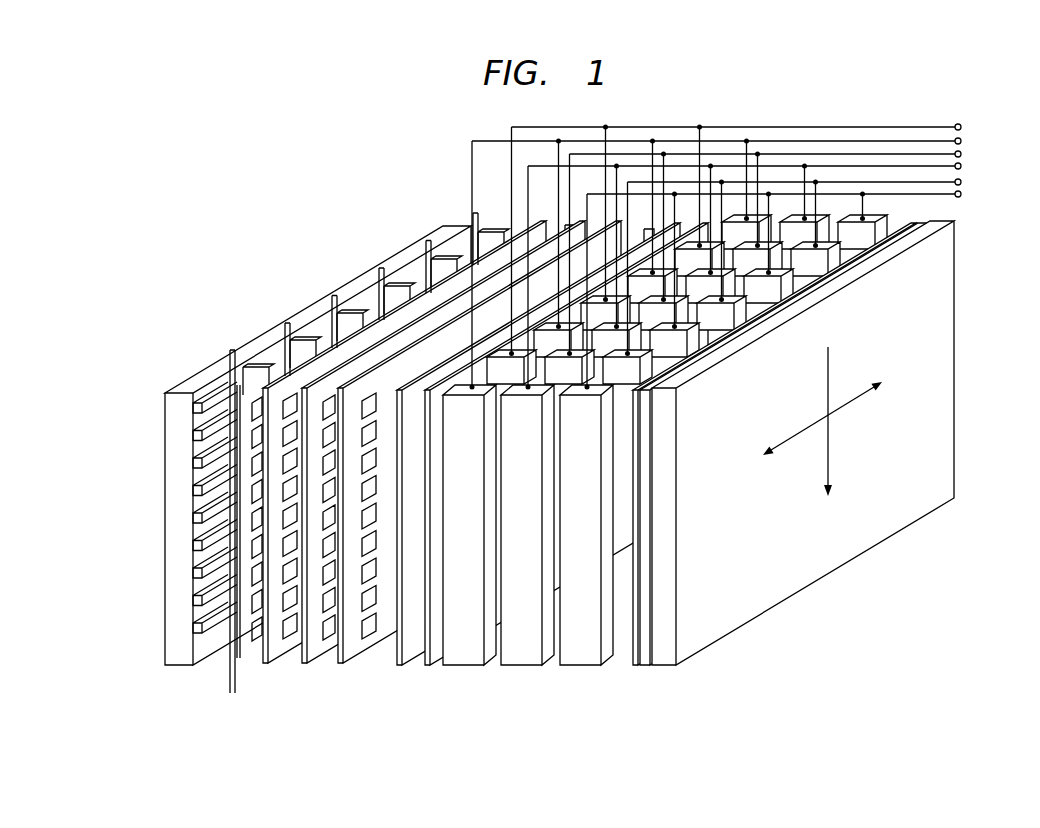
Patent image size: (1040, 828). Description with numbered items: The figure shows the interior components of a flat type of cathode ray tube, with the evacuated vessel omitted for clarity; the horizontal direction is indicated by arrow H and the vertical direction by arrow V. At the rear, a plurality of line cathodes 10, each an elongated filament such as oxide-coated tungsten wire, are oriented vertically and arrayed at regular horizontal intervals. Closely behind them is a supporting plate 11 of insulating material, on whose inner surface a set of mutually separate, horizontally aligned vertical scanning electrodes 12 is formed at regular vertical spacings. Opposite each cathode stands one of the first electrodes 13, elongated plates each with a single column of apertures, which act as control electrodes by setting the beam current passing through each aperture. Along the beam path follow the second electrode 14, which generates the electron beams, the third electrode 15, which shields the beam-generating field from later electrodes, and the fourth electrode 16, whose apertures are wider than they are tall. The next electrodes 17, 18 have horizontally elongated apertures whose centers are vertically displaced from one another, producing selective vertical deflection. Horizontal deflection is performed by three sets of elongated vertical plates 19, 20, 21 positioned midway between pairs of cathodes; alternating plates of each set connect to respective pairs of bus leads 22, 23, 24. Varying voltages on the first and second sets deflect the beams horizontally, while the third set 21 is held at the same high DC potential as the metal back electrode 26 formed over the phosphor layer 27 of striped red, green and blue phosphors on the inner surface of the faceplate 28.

The line cathodes 10 is at (330, 298).
The supporting plate 11 is at (165, 417).
The vertical scanning electrodes 12 is at (196, 496).
The first electrodes (G1 control electrodes) 13 is at (397, 300).
The second electrode (G2 electrode) 14 is at (278, 652).
The third electrode (G3 electrode) 15 is at (319, 652).
The fourth electrode (G4 electrode) 16 is at (361, 652).
The vertical deflection electrode 17 is at (410, 657).
The vertical deflection electrode 18 is at (436, 663).
The DH-1 horizontal deflection electrodes 19 is at (466, 663).
The DH-2 horizontal deflection electrodes 20 is at (524, 663).
The DH-3 horizontal deflection electrodes 21 is at (581, 660).
The bus leads 22 is at (737, 251).
The bus leads 23 is at (765, 264).
The bus leads 24 is at (794, 278).
The metal back electrode 26 is at (636, 666).
The phosphor layer 27 is at (648, 666).
The faceplate 28 is at (700, 642).